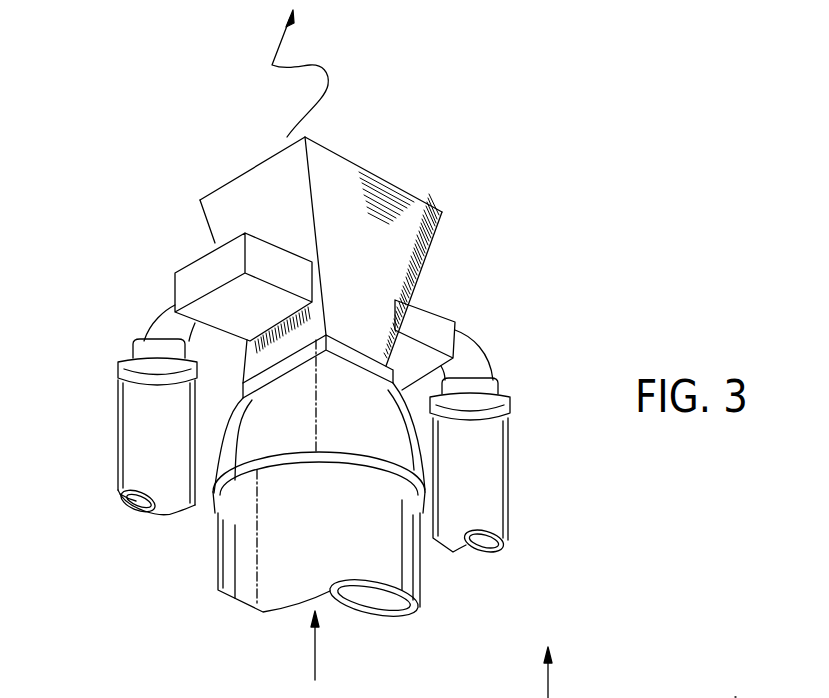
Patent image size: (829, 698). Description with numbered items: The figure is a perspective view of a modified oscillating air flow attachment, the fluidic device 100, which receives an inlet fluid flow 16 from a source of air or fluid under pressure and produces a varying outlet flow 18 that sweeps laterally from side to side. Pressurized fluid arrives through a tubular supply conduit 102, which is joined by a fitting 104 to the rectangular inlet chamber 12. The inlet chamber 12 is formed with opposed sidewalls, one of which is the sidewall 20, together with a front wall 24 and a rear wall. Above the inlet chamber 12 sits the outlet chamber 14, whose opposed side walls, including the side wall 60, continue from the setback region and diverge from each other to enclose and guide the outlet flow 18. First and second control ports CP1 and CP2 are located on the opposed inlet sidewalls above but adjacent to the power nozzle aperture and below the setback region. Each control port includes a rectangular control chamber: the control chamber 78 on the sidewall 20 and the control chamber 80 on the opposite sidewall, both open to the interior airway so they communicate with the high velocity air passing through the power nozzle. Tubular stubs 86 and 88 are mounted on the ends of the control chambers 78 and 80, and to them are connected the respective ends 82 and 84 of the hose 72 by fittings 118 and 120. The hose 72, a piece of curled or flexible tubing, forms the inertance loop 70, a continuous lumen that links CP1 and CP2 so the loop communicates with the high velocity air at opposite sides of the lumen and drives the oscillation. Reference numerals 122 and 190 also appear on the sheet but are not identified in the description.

The fluidic device 100 is at (500, 241).
The varying outlet flow 18 is at (327, 67).
The outlet chamber 14 is at (448, 229).
The side wall 60 is at (235, 213).
The sidewall 20 is at (253, 364).
The front wall 24 is at (353, 340).
The inlet chamber 12 is at (384, 335).
The control chamber 78 is at (195, 273).
The first control port CP1 is at (143, 293).
The tubular stub 86 is at (155, 330).
The inertance loop 70 is at (98, 416).
The fitting 118 is at (125, 363).
The hose end 82 is at (152, 408).
The hose 72 is at (127, 476).
The control chamber 80 is at (438, 323).
The second control port CP2 is at (495, 331).
The tubular stub 88 is at (477, 365).
The fitting 120 is at (521, 416).
The hose end 84 is at (482, 455).
The fitting 104 is at (357, 460).
The tubular supply conduit 102 is at (423, 567).
The inlet fluid flow 16 is at (315, 668).
The flow arrow 122 is at (548, 697).
The component 190 is at (752, 687).